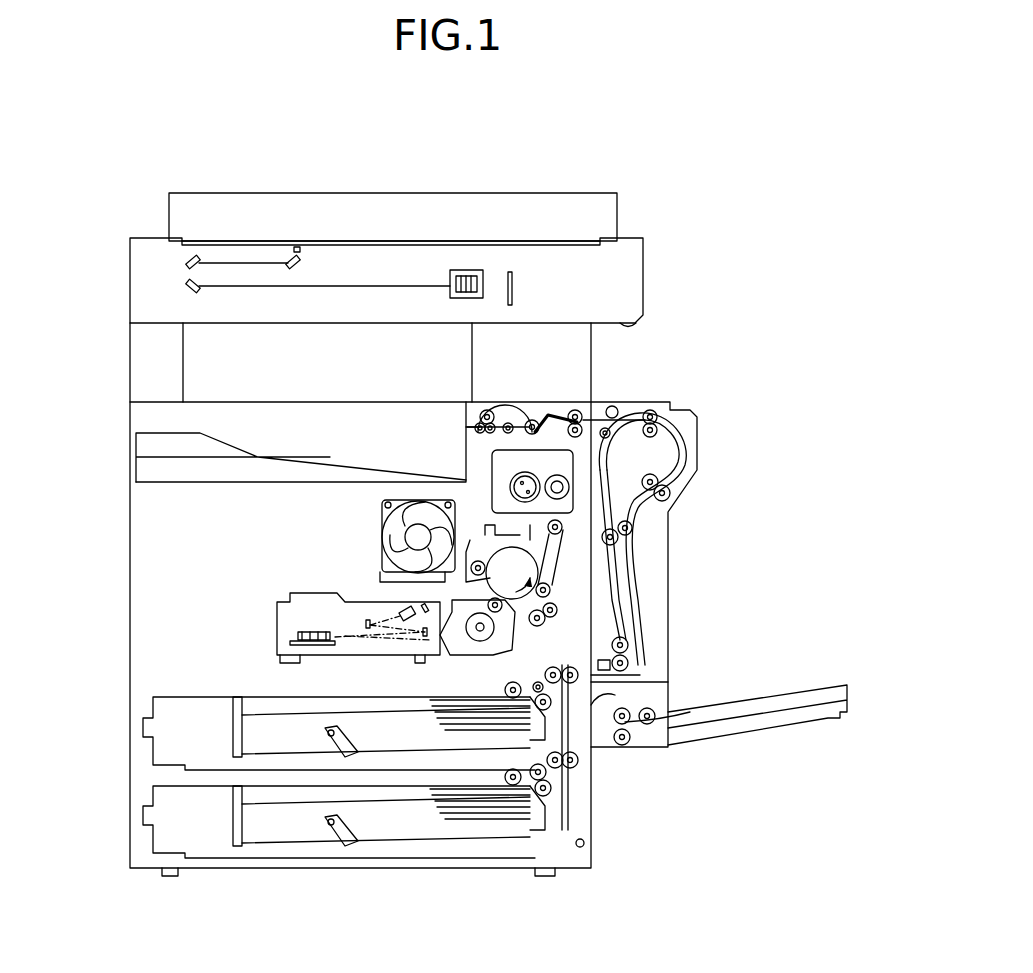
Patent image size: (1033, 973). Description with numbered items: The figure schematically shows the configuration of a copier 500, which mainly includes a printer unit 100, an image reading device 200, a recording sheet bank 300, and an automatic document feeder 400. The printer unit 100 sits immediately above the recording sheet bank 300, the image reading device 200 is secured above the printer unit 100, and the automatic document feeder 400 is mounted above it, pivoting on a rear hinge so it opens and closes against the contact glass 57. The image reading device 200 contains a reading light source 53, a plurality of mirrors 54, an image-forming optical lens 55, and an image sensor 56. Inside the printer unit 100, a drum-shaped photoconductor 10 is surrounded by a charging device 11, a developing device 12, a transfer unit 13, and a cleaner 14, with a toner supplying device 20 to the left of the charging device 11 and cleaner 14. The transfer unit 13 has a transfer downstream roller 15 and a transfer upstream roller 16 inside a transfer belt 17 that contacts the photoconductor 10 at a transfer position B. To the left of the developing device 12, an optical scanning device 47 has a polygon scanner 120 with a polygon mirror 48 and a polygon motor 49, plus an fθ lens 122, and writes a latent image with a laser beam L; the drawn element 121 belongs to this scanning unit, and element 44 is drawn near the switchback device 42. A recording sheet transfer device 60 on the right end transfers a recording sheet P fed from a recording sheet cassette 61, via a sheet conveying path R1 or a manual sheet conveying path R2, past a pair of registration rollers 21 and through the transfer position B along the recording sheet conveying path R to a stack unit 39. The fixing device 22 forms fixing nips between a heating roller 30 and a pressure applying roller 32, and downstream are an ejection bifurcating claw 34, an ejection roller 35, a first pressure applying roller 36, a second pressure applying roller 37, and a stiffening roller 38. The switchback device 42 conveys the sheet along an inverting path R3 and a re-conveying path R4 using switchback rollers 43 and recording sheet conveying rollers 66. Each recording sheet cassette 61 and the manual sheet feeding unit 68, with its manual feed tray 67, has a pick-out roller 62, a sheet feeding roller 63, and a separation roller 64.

The copier 500 is at (490, 170).
The automatic document feeder 400 is at (155, 214).
The image reading device 200 is at (125, 310).
The printer unit 100 is at (124, 525).
The recording sheet bank 300 is at (118, 805).
The reading light source 53 is at (300, 250).
The mirrors 54 is at (190, 262).
The image-forming optical lens 55 is at (468, 270).
The image sensor 56 is at (510, 272).
The contact glass 57 is at (540, 241).
The stack unit 39 is at (362, 468).
The stiffening roller 38 is at (480, 415).
The ejection roller 35 is at (490, 422).
The first pressure applying roller 36 is at (508, 422).
The second pressure applying roller 37 is at (475, 440).
The recording sheet conveying path R is at (520, 418).
The ejection bifurcating claw 34 is at (540, 415).
The recording sheet transfer device 60 is at (545, 395).
The recording sheet conveying rollers 66 is at (597, 405).
The pressure applying roller 32 is at (600, 480).
The inverting path R3 is at (697, 452).
The switchback rollers 43 is at (668, 500).
The switchback device 42 is at (756, 535).
The guide 44 is at (650, 540).
The heating roller 30 is at (493, 468).
The fixing device 22 is at (492, 480).
The photoconductor 10 is at (400, 525).
The toner supplying device 20 is at (384, 546).
The charging device 11 is at (410, 556).
The cleaner 14 is at (498, 520).
The transfer downstream roller 15 is at (560, 527).
The transfer belt 17 is at (557, 545).
The transfer position B is at (550, 585).
The transfer unit 13 is at (630, 592).
The transfer upstream roller 16 is at (563, 598).
The registration rollers 21 is at (573, 618).
The re-conveying path R4 is at (670, 622).
The sheet conveying path R1 is at (555, 655).
The developing device 12 is at (452, 662).
The optical scanning device 47 is at (296, 596).
The polygon scanner 120 is at (226, 650).
The polygon mirror 48 is at (300, 632).
The polygon motor 49 is at (290, 644).
The polygon mirror 121 is at (410, 610).
The fθ lens 122 is at (390, 600).
The laser beam L is at (345, 648).
The recording sheet cassette 61 is at (143, 757).
The recording sheet P is at (288, 745).
The pick-out roller 62 is at (505, 690).
The sheet feeding roller 63 is at (545, 677).
The separation roller 64 is at (600, 735).
The manual sheet conveying path R2 is at (672, 702).
The manual feed tray 67 is at (798, 730).
The manual sheet feeding unit 68 is at (797, 690).